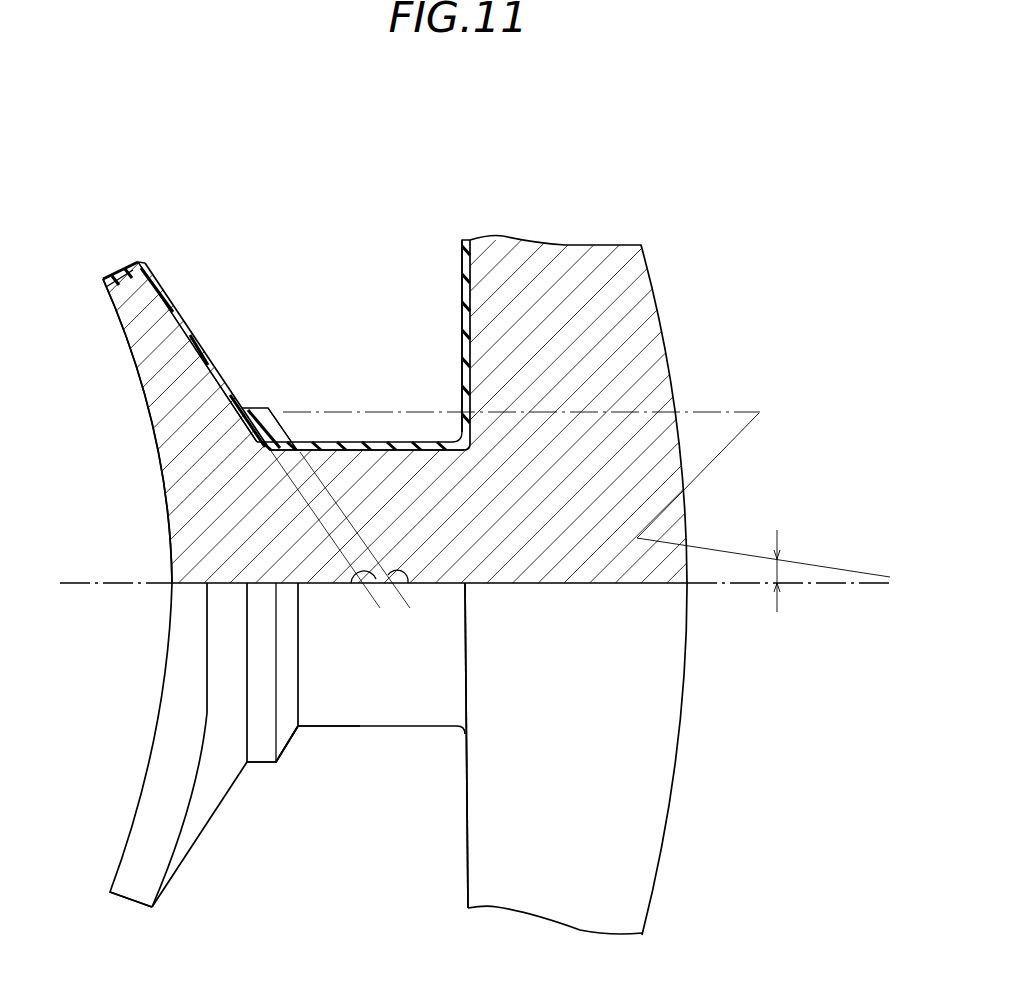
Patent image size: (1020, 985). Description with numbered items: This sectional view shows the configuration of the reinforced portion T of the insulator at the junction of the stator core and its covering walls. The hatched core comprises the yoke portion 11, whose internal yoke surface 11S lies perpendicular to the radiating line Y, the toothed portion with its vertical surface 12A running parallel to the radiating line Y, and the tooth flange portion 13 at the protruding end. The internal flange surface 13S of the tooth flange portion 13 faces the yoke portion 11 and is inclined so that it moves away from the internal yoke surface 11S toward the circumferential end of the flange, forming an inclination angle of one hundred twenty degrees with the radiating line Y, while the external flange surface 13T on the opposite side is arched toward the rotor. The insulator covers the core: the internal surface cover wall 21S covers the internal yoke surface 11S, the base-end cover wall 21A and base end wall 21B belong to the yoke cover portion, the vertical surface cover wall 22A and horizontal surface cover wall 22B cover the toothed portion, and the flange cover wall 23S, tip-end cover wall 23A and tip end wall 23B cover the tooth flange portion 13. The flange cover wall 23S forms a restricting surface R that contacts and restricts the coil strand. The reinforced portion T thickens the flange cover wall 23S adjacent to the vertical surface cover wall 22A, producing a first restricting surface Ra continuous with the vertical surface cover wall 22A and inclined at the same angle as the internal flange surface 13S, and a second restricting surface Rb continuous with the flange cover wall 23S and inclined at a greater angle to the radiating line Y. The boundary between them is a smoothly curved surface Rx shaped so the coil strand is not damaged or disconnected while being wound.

The yoke portion 11 is at (631, 345).
The internal yoke surface 11S is at (463, 311).
The vertical surface 12A is at (383, 442).
The tooth flange portion 13 is at (180, 477).
The internal flange surface 13S is at (167, 307).
The external flange surface 13T is at (150, 425).
The base-end cover wall 21A is at (662, 748).
The base end wall 21B is at (462, 614).
The internal surface cover wall 21S is at (460, 258).
The vertical surface cover wall 22A is at (414, 441).
The horizontal surface cover wall 22B is at (343, 698).
The tip-end cover wall 23A is at (183, 660).
The tip end wall 23B is at (247, 662).
The flange cover wall 23S is at (196, 332).
The restricting surface R is at (218, 367).
The first restricting surface Ra is at (292, 431).
The second restricting surface Rb is at (260, 405).
The curved surface Rx is at (278, 765).
The reinforced portion T is at (280, 406).
The radiating line Y is at (465, 584).